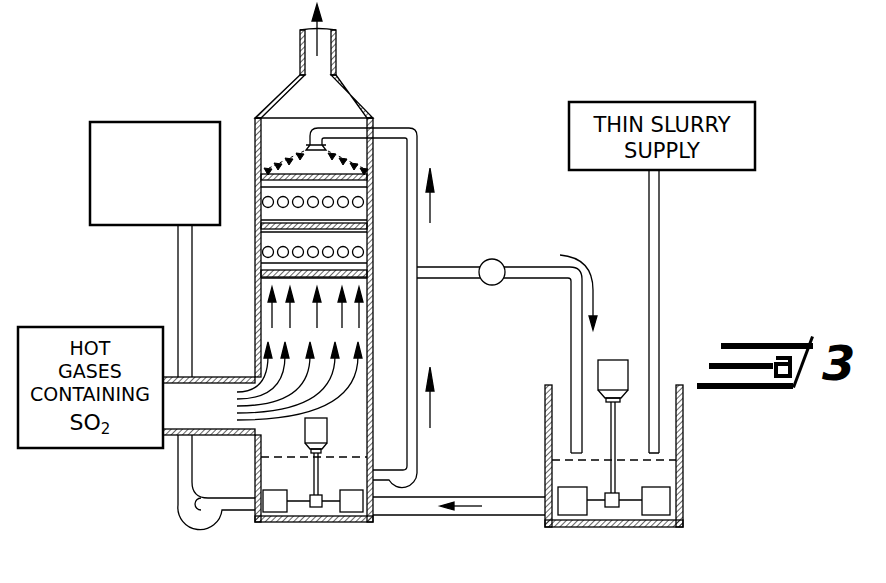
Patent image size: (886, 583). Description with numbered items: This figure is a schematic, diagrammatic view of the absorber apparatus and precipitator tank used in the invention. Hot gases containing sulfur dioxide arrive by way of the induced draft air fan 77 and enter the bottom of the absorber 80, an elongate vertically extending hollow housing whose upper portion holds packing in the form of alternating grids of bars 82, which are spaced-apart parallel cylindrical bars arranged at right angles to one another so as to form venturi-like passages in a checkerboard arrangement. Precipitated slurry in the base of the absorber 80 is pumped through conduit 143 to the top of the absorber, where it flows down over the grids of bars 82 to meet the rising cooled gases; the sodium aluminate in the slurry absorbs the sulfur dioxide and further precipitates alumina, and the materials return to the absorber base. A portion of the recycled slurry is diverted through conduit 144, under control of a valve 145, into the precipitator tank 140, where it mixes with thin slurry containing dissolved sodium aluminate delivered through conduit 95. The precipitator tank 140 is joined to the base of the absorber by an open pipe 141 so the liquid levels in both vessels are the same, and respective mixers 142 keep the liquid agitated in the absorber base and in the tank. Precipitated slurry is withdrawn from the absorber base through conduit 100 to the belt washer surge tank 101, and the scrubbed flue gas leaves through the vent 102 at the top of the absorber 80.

The absorber 80 is at (246, 110).
The vent 102 is at (336, 64).
The grids of bars 82 is at (262, 188).
The induced draft air fan 77 is at (240, 377).
The belt washer surge tank 101 is at (155, 173).
The conduit 100 is at (183, 281).
The conduit 143 is at (410, 245).
The conduit 144 is at (520, 280).
The valve 145 is at (497, 258).
The conduit 95 is at (659, 250).
The precipitator tank 140 is at (683, 478).
The mixers 142 is at (322, 425).
The open pipe 141 is at (494, 497).